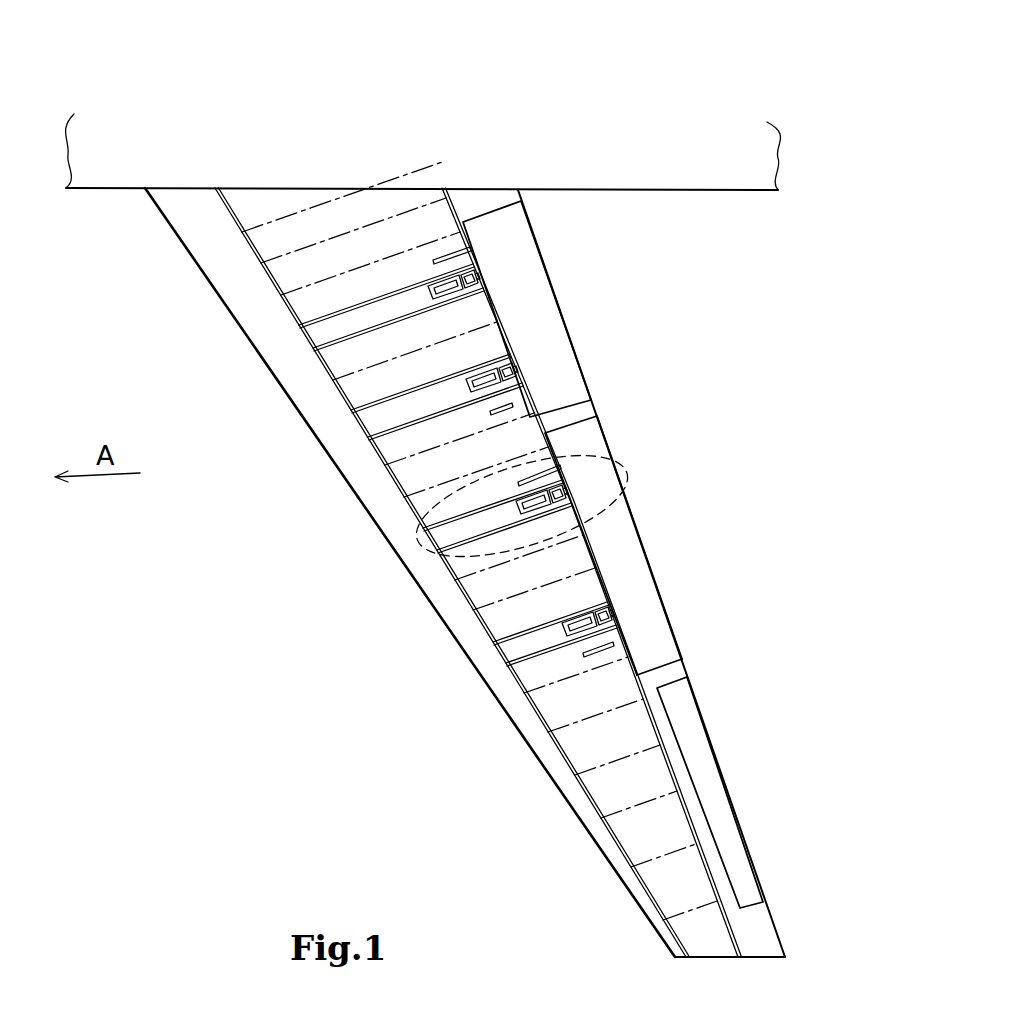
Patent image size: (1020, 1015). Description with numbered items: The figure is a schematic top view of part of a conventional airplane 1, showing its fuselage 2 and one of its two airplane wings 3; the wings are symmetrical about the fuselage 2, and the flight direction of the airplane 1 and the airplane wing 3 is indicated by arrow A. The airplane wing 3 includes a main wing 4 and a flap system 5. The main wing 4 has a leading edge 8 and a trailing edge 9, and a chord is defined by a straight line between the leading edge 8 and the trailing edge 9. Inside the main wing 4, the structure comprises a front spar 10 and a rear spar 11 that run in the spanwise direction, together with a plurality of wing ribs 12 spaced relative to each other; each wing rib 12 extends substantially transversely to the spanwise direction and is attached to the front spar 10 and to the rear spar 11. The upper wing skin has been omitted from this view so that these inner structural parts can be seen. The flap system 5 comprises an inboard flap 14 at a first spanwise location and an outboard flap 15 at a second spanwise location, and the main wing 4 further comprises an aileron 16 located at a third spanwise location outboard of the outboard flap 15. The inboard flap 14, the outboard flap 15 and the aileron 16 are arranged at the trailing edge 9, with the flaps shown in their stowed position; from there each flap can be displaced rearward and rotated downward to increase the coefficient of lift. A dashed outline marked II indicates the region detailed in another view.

The airplane 1 is at (705, 88).
The fuselage 2 is at (723, 147).
The airplane wing 3 is at (207, 317).
The main wing 4 is at (325, 415).
The flap system 5 is at (595, 325).
The leading edge 8 is at (357, 497).
The trailing edge 9 is at (650, 672).
The front spar 10 is at (533, 665).
The rear spar 11 is at (652, 733).
The wing rib 12 is at (533, 664).
The inboard flap 14 is at (545, 290).
The outboard flap 15 is at (630, 565).
The aileron 16 is at (732, 803).
The section indicator II is at (630, 462).